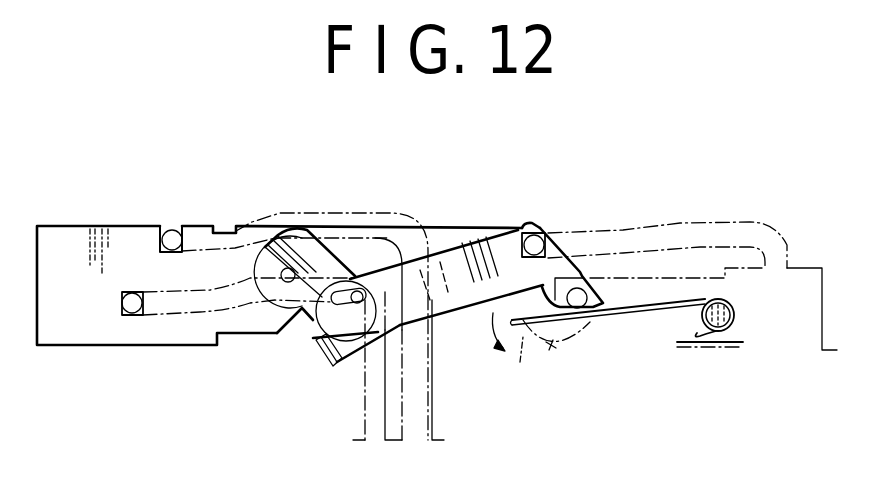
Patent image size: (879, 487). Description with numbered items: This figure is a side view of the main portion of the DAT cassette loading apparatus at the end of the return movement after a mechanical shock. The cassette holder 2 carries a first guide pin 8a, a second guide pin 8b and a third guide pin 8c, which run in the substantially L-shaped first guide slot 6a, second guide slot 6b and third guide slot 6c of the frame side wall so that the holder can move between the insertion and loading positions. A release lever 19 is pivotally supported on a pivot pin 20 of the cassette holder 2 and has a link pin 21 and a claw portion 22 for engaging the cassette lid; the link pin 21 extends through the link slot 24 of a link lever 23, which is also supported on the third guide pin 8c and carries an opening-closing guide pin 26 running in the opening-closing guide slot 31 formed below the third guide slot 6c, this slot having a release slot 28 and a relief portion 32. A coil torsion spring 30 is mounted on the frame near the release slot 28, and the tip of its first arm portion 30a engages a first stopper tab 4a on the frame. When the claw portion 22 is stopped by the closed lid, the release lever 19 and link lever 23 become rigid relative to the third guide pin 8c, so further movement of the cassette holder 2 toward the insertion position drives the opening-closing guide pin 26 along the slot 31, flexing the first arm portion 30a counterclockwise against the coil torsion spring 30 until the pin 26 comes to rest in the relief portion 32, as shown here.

The cassette holder 2 is at (70, 346).
The first stopper tab 4a is at (547, 311).
The first guide slot 6a is at (182, 320).
The second guide slot 6b is at (197, 250).
The third guide slot 6c is at (693, 245).
The first guide pin 8a is at (132, 316).
The second guide pin 8b is at (166, 232).
The third guide pin 8c is at (537, 240).
The release lever 19 is at (292, 242).
The pivot pin 20 is at (274, 335).
The link pin 21 is at (358, 289).
The claw portion 22 is at (320, 350).
The link lever 23 is at (458, 306).
The link slot 24 is at (349, 360).
The opening-closing guide pin 26 is at (577, 315).
The release slot 28 is at (803, 330).
The coil torsion spring 30 is at (730, 348).
The first arm portion 30a is at (602, 314).
The opening-closing guide slot 31 is at (644, 300).
The relief portion 32 is at (552, 350).